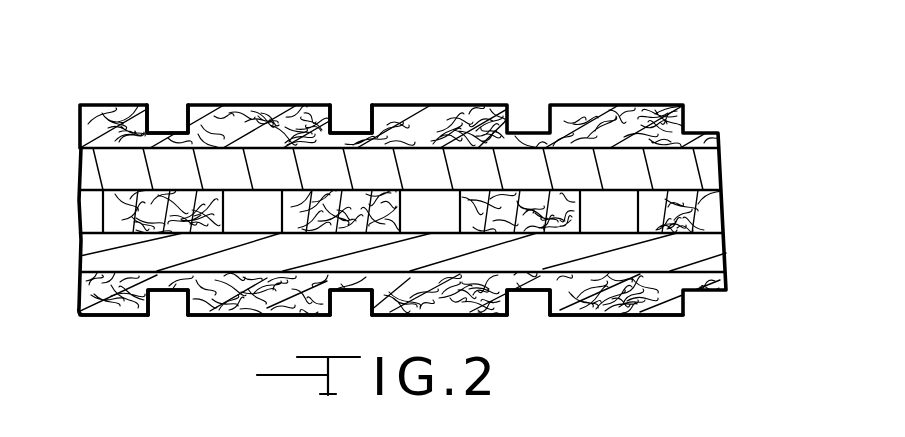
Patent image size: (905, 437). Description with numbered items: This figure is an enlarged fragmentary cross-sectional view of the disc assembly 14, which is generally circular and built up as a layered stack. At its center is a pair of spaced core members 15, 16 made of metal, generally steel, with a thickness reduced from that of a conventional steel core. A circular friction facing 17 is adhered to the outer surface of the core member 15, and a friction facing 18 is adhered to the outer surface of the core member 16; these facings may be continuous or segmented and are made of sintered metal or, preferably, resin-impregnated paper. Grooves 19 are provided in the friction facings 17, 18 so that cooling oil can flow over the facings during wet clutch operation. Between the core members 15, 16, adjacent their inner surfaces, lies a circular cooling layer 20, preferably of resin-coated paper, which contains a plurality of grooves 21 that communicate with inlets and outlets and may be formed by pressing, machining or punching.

The disc assembly 14 is at (442, 103).
The core member 15 is at (170, 280).
The core member 16 is at (543, 233).
The friction facing 17 is at (675, 313).
The friction facing 18 is at (568, 105).
The grooves 19 is at (150, 128).
The cooling layer 20 is at (704, 197).
The grooves 21 is at (226, 207).